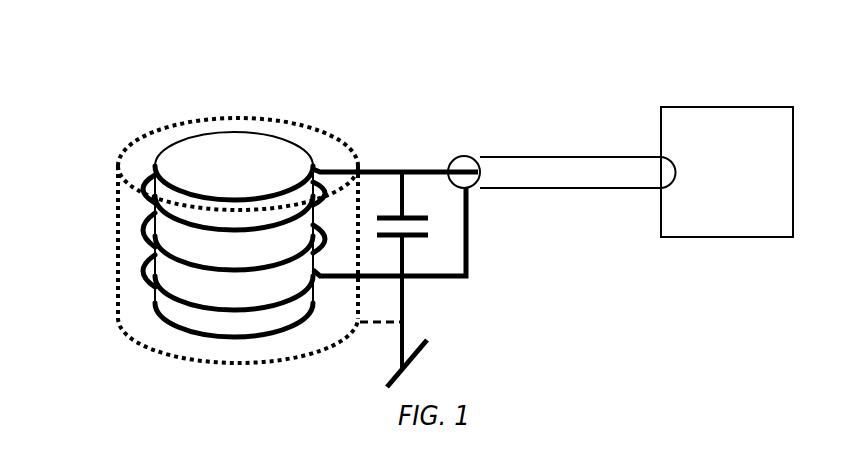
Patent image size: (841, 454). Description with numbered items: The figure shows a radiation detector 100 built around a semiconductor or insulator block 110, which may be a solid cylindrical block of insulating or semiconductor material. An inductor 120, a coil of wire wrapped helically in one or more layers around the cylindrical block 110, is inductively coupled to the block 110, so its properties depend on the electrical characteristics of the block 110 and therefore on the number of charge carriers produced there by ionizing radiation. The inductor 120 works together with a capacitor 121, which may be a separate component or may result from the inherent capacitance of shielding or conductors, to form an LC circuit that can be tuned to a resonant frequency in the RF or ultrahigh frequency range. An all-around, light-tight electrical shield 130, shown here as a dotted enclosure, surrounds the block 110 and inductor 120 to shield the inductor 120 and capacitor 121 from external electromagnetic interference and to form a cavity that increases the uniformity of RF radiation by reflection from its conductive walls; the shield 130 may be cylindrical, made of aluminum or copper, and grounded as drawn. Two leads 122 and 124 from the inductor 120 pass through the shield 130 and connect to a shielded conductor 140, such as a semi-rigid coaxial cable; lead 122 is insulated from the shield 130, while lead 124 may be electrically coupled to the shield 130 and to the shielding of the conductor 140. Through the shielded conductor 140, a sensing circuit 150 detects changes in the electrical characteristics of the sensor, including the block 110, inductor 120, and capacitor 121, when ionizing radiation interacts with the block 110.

The radiation detector 100 is at (162, 35).
The semiconductor or insulator block 110 is at (248, 176).
The inductor 120 is at (145, 272).
The electrical shield 130 is at (213, 116).
The lead 122 is at (378, 168).
The lead 124 is at (435, 278).
The capacitor 121 is at (417, 235).
The shielded conductor 140 is at (545, 189).
The sensing circuit 150 is at (712, 208).